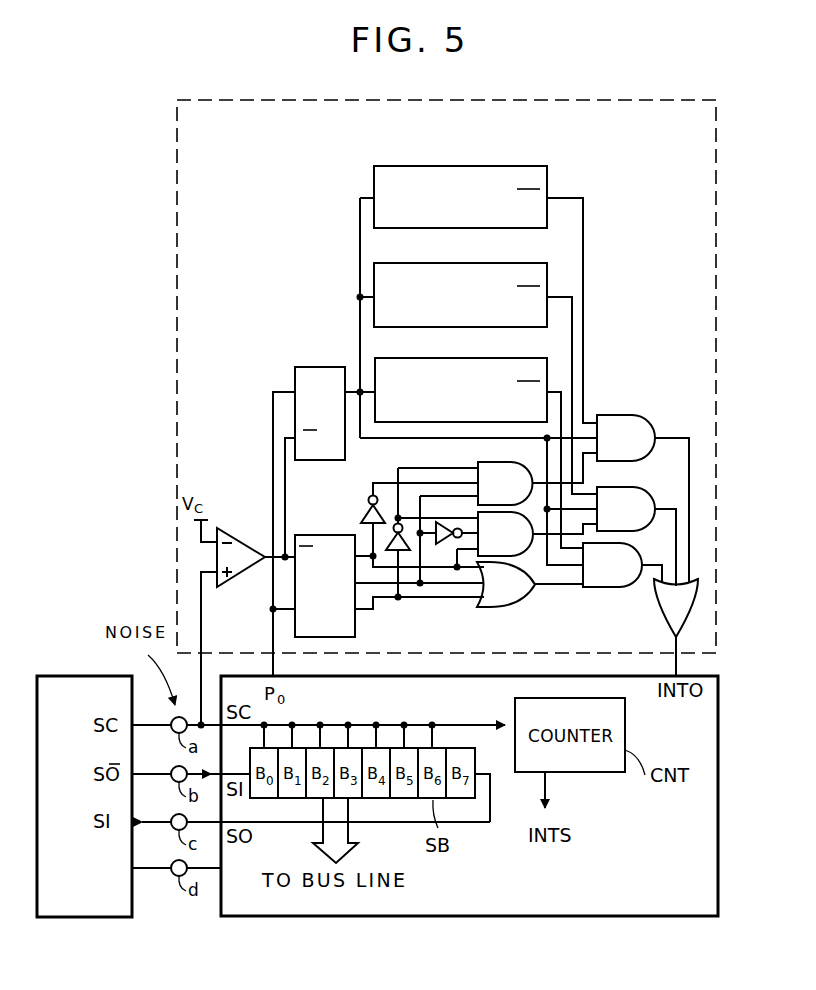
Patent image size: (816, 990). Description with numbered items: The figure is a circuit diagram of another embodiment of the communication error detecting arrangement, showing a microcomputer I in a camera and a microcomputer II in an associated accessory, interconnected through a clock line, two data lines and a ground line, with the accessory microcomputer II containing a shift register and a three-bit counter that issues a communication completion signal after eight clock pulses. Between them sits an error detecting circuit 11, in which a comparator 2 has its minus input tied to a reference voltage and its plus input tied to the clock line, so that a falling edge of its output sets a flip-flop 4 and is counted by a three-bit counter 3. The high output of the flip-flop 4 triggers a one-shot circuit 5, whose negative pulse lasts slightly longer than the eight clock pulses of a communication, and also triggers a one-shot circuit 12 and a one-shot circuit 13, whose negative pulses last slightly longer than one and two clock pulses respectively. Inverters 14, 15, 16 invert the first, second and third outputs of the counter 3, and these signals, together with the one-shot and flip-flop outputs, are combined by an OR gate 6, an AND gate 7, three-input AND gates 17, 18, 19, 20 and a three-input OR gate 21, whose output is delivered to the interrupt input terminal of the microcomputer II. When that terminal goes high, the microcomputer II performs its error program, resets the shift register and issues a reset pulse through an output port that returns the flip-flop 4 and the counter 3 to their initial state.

The comparator 2 is at (244, 537).
The 3-bit counter 3 is at (357, 627).
The flip-flop 4 is at (322, 367).
The one-shot circuit 5 is at (490, 358).
The OR gate 6 is at (503, 610).
The AND gate 7 is at (600, 588).
The error detecting circuit 11 is at (716, 385).
The one-shot circuit 12 is at (487, 263).
The one-shot circuit 13 is at (498, 166).
The inverter 14 is at (364, 511).
The inverter 15 is at (405, 553).
The inverter 16 is at (446, 545).
The 3-input AND gate 17 is at (480, 462).
The 3-input AND gate 18 is at (530, 548).
The 3-input AND gate 19 is at (620, 415).
The 3-input AND gate 20 is at (640, 487).
The 3-input OR gate 21 is at (657, 623).
The microcomputer I is at (100, 918).
The microcomputer II is at (330, 917).